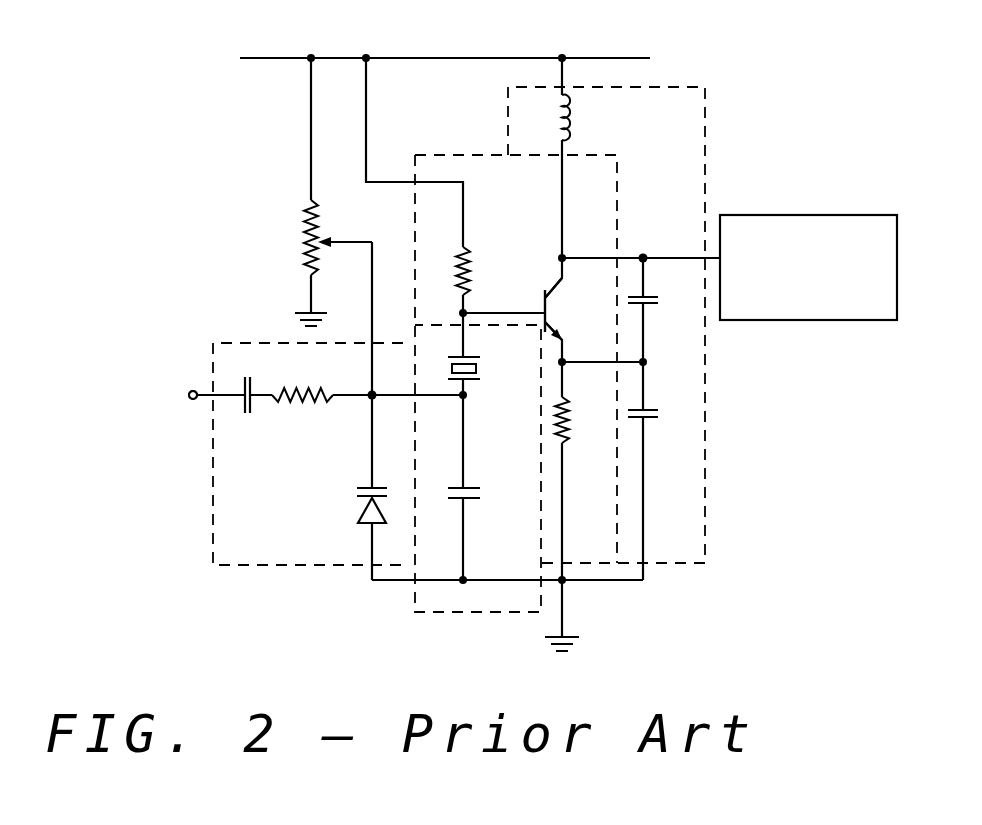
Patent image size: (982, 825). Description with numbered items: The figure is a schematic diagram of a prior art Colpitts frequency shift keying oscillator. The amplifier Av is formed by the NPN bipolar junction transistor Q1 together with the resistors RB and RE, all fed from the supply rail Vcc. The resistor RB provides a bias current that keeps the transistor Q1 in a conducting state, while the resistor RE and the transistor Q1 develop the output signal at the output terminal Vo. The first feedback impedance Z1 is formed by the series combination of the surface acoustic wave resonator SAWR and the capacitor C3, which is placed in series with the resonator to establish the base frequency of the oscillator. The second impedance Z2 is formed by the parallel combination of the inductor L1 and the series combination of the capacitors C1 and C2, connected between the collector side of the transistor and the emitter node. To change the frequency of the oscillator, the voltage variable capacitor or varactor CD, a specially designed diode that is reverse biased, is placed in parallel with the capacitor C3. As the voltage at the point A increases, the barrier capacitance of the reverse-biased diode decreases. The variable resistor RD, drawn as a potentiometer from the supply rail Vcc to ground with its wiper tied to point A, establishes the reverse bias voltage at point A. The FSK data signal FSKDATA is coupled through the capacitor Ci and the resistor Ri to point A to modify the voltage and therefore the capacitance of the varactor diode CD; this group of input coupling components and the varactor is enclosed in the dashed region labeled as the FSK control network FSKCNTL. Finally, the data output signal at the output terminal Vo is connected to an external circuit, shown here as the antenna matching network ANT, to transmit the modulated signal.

The supply voltage rail Vcc is at (445, 42).
The amplifier Av is at (468, 153).
The inductor L1 is at (585, 120).
The output terminal Vo is at (720, 258).
The variable resistor RD is at (288, 237).
The point A is at (370, 392).
The resistor RB is at (486, 271).
The NPN bipolar junction transistor Q1 is at (571, 309).
The capacitor C1 is at (661, 302).
The capacitor C2 is at (661, 419).
The capacitor C3 is at (480, 512).
The capacitor Ci is at (239, 414).
The resistor Ri is at (302, 376).
The varactor CD is at (352, 512).
The resistor RE is at (577, 420).
The surface acoustic wave resonator SAWR is at (483, 360).
The impedance Z1 is at (430, 612).
The impedance Z2 is at (705, 537).
The FSK data signal FSKDATA is at (162, 368).
The FSK control network FSKCNTL is at (228, 565).
The antenna matching network ANT is at (808, 267).